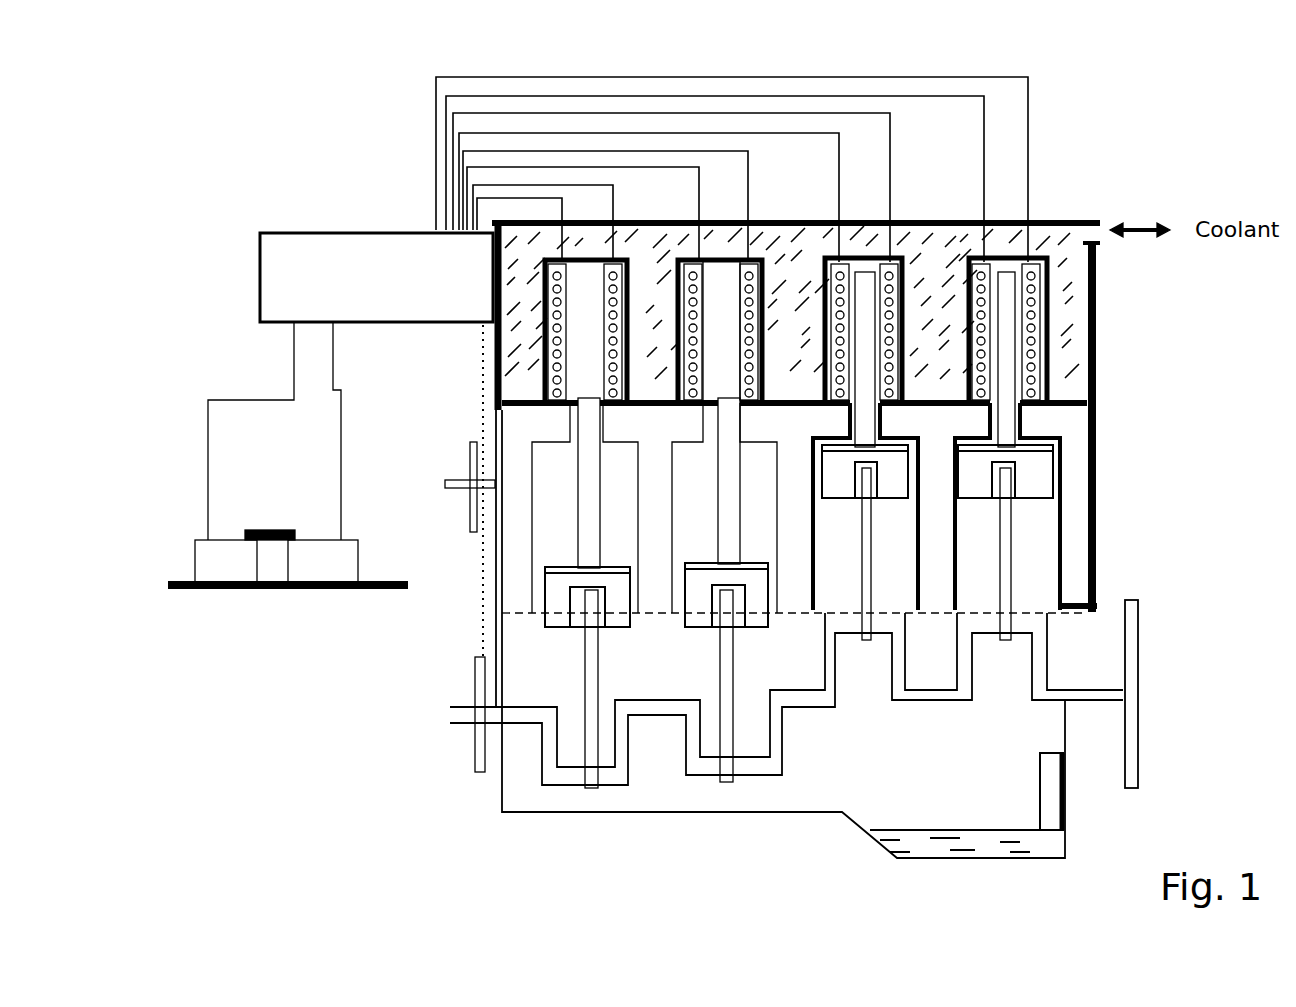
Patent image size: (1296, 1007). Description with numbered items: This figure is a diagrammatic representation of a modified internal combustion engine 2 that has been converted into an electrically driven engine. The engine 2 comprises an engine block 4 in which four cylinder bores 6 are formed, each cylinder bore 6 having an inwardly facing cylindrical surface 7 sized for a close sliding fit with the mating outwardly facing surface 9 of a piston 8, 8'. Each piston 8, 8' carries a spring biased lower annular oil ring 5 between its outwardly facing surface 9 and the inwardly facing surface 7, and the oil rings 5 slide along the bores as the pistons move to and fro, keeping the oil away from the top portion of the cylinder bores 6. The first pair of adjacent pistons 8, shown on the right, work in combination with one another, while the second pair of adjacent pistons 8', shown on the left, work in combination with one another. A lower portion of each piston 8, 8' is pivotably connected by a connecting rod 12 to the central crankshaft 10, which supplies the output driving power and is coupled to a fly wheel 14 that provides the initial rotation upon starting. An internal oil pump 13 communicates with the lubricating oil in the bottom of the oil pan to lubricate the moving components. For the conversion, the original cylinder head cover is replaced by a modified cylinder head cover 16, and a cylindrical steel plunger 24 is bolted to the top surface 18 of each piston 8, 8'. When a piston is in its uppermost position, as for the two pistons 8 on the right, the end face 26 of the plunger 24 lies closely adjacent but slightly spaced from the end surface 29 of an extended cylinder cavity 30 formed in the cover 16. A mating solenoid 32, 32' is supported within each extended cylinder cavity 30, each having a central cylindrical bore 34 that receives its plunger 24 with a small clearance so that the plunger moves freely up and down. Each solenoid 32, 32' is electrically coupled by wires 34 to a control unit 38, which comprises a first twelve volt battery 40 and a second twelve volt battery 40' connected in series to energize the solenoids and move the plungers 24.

The internal combustion engine 2 is at (1200, 447).
The engine block 4 is at (518, 812).
The oil ring 5 is at (547, 625).
The cylinder bore 6 is at (565, 532).
The inwardly facing cylindrical surface 7 is at (1045, 558).
The piston 8 is at (937, 498).
The piston 8' is at (654, 620).
The outwardly facing surface 9 is at (545, 600).
The central crankshaft 10 is at (758, 765).
The connecting rod 12 is at (594, 733).
The internal oil pump 13 is at (1050, 808).
The fly wheel 14 is at (1130, 665).
The modified cylinder head cover 16 is at (1097, 347).
The top surface 18 is at (1050, 437).
The cylindrical steel plunger 24 is at (1008, 325).
The end face 26 is at (1035, 228).
The end surface 29 is at (492, 350).
The extended cylinder cavity 30 is at (717, 305).
The solenoid 32 is at (1003, 286).
The solenoid 32' is at (610, 281).
The wires 34 is at (940, 57).
The control unit 38 is at (350, 386).
The first twelve volt battery 40 is at (288, 591).
The second twelve volt battery 40' is at (323, 594).